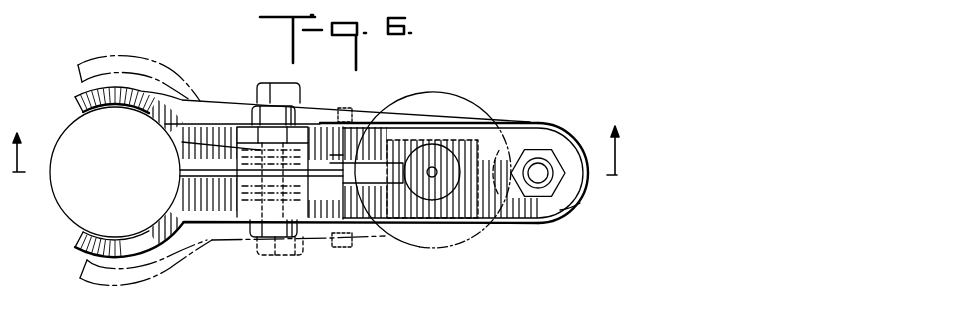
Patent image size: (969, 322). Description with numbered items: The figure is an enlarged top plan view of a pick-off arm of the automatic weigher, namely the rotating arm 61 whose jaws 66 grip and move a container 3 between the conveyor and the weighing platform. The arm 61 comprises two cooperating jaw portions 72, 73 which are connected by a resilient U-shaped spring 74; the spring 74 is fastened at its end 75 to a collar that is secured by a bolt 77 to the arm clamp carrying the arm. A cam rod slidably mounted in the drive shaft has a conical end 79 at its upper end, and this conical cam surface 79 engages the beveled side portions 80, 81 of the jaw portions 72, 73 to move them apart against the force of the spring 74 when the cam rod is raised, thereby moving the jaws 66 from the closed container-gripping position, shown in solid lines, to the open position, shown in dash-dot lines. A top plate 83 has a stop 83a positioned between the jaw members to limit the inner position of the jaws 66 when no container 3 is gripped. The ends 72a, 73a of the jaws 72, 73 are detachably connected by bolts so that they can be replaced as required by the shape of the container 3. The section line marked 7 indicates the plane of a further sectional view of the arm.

The container 3 is at (70, 204).
The jaws 66 is at (306, 147).
The end of jaw 72a is at (170, 110).
The end of jaw 73a is at (306, 225).
The jaw portion 72 is at (320, 137).
The jaw portion 73 is at (320, 207).
The rotating arm 61 is at (507, 116).
The U-shaped spring 74 is at (561, 129).
The end of spring 75 is at (580, 203).
The top plate 83 is at (360, 128).
The stop 83a is at (370, 176).
The beveled side portion 80 is at (430, 104).
The beveled side portion 81 is at (477, 240).
The conical end 79 is at (448, 170).
The bolt 77 is at (542, 171).
The section line 7- 7 is at (613, 140).